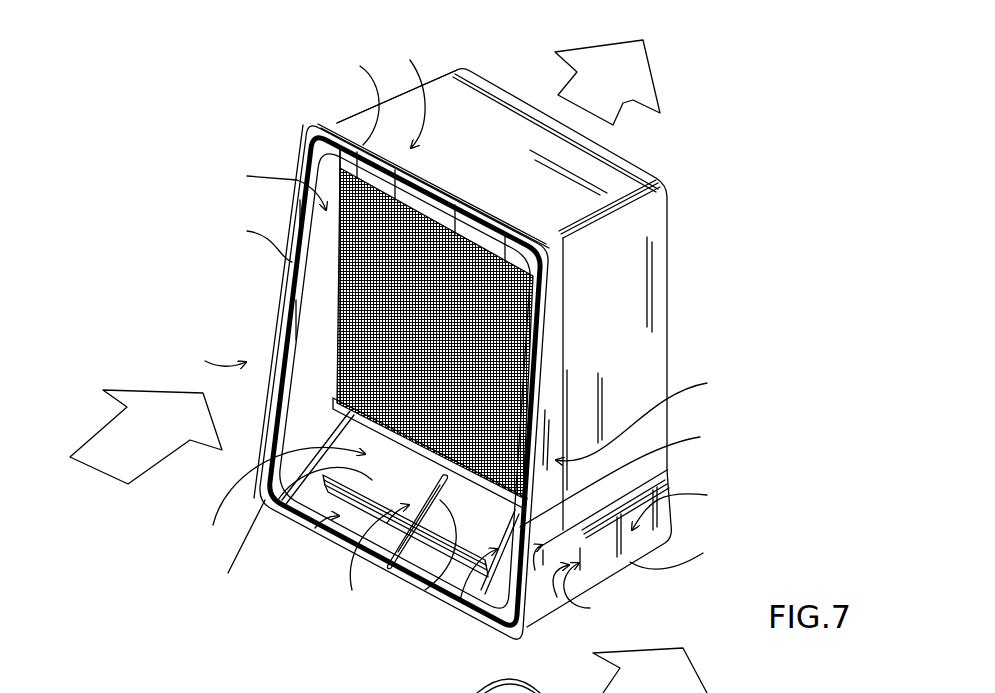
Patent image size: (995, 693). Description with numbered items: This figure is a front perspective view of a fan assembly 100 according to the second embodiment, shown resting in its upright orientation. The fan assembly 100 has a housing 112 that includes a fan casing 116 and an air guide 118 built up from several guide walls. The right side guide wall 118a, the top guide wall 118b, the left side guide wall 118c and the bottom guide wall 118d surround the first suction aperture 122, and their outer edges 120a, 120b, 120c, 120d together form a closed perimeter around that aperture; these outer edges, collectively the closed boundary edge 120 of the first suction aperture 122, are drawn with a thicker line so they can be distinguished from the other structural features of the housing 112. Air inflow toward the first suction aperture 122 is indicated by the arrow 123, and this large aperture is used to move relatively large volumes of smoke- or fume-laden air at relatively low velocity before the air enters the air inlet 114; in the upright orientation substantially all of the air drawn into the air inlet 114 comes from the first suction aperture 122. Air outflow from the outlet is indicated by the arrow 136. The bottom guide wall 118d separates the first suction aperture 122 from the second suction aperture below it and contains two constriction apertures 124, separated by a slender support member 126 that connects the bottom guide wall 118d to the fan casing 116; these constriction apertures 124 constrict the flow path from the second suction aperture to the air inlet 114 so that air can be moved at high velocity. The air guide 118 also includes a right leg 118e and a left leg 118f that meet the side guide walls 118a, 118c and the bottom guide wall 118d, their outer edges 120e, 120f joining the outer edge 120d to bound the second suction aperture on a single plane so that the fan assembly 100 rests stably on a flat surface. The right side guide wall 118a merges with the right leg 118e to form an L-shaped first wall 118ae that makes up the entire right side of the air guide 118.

The fan assembly 100 is at (702, 146).
The housing 112 is at (318, 119).
The air inlet 114 is at (323, 291).
The fan casing 116 is at (482, 78).
The air guide 118 is at (404, 382).
The right side guide wall 118a is at (660, 415).
The guide wall 118b is at (393, 88).
The left side guide wall 118c is at (260, 187).
The bottom guide wall 118d is at (313, 530).
The right leg 118e is at (700, 508).
The left leg 118f is at (265, 507).
The first wall 118ae is at (560, 584).
The closed boundary edge 120 is at (405, 381).
The outer edge 120a is at (642, 476).
The outer edge 120b is at (338, 92).
The outer edge 120c is at (241, 240).
The outer edge 120d is at (357, 537).
The outer edge 120e is at (698, 553).
The outer edge 120f is at (268, 537).
The first suction aperture 122 is at (213, 349).
The arrow 123 is at (115, 392).
The constriction apertures 124 is at (380, 530).
The slender support member 126 is at (450, 530).
The arrow 136 is at (640, 79).